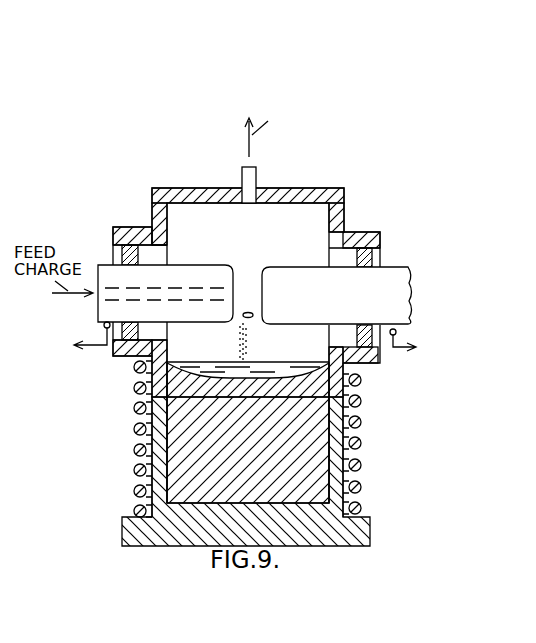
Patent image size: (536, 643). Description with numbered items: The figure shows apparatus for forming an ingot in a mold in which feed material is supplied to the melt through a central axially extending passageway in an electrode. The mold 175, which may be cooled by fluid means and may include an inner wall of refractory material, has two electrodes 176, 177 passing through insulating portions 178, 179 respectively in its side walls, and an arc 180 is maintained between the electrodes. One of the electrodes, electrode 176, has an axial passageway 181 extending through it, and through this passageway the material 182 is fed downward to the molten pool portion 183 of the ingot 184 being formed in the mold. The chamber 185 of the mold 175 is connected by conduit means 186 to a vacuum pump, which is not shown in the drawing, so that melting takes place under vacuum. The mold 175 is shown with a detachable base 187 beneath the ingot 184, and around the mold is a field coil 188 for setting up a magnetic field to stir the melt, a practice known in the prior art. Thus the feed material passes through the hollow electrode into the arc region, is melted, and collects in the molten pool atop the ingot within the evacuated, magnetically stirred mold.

The mold 175 is at (352, 186).
The electrode 176 is at (104, 327).
The electrode 177 is at (394, 278).
The insulating portion 178 is at (113, 259).
The insulating portion 179 is at (399, 349).
The arc 180 is at (249, 319).
The axial passageway 181 is at (195, 286).
The material 182 is at (242, 352).
The molten pool portion 183 is at (193, 366).
The ingot 184 is at (278, 383).
The chamber 185 is at (270, 232).
The conduit means 186 is at (257, 178).
The detachable base 187 is at (369, 541).
The field coil 188 is at (363, 402).